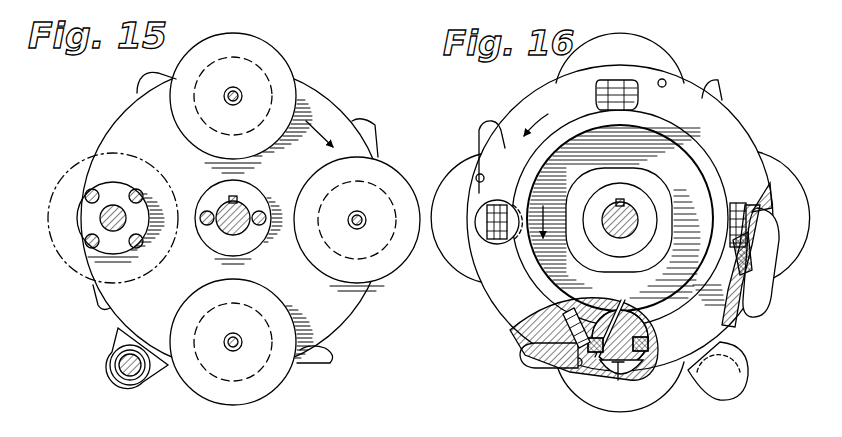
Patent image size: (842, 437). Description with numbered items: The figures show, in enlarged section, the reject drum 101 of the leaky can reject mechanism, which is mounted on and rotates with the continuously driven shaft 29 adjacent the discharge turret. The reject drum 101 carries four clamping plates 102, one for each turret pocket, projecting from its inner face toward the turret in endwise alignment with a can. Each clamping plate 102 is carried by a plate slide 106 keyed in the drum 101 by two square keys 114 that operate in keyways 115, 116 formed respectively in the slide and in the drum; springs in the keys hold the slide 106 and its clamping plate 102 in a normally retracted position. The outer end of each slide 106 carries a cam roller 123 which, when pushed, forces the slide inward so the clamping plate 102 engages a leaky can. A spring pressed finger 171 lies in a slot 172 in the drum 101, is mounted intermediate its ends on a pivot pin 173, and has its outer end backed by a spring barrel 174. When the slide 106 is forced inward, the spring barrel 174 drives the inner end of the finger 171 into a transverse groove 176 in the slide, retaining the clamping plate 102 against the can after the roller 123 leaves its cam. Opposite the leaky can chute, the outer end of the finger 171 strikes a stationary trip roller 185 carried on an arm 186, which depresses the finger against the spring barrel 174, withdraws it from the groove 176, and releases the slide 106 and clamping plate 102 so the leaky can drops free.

In FIG. 15, the driving shaft 29 is at (237, 227).
In FIG. 16, the driving shaft 29 is at (628, 215).
In FIG. 15, the reject drum 101 is at (327, 107).
In FIG. 16, the reject drum 101 is at (715, 127).
In FIG. 15, the clamping plate 102 is at (80, 163).
In FIG. 16, the clamping plate 102 is at (657, 46).
In FIG. 16, the plate slide 106 is at (588, 370).
In FIG. 16, the square key 114 is at (730, 247).
In FIG. 16, the keyway 115 is at (630, 303).
In FIG. 16, the keyway 116 is at (597, 325).
In FIG. 16, the cam roller 123 is at (640, 83).
In FIG. 15, the spring pressed finger 171 is at (380, 125).
In FIG. 16, the spring pressed finger 171 is at (716, 84).
In FIG. 16, the slot 172 is at (738, 322).
In FIG. 16, the pivot pin 173 is at (478, 175).
In FIG. 16, the spring barrel 174 is at (553, 315).
In FIG. 16, the transverse groove 176 is at (619, 385).
In FIG. 15, the trip roller 185 is at (132, 385).
In FIG. 16, the trip roller 185 is at (745, 352).
In FIG. 15, the arm 186 is at (120, 342).
In FIG. 16, the arm 186 is at (725, 378).